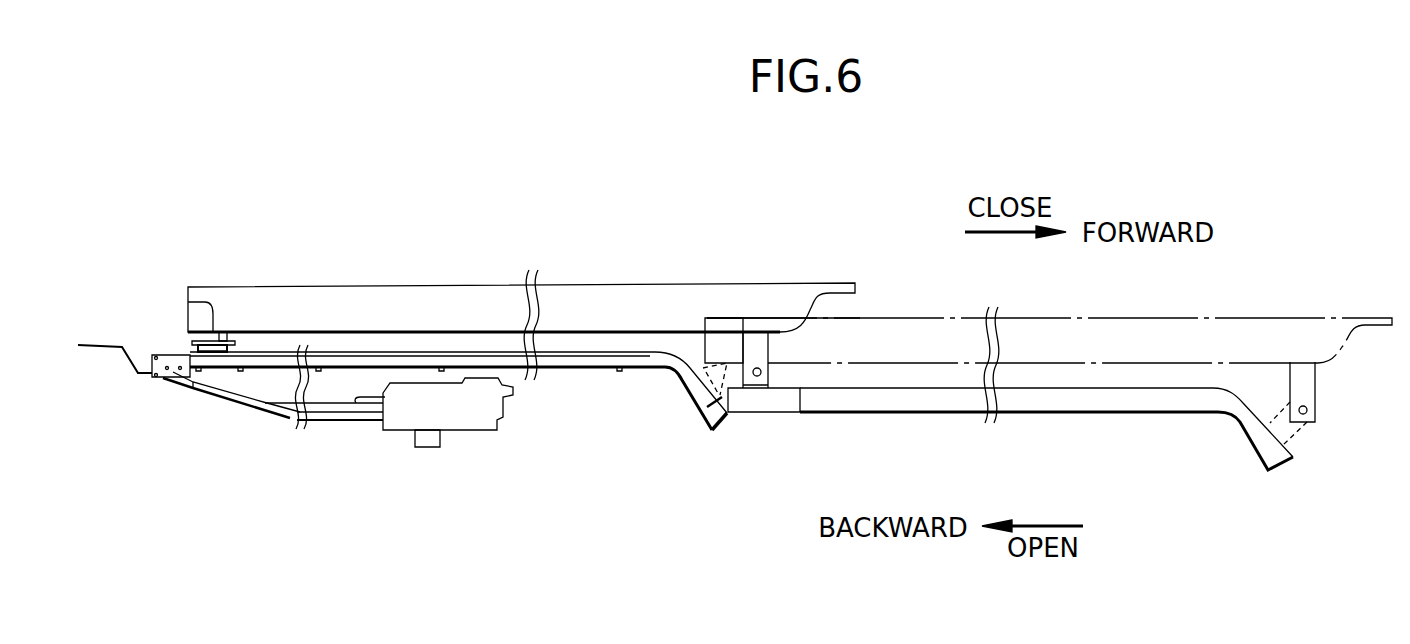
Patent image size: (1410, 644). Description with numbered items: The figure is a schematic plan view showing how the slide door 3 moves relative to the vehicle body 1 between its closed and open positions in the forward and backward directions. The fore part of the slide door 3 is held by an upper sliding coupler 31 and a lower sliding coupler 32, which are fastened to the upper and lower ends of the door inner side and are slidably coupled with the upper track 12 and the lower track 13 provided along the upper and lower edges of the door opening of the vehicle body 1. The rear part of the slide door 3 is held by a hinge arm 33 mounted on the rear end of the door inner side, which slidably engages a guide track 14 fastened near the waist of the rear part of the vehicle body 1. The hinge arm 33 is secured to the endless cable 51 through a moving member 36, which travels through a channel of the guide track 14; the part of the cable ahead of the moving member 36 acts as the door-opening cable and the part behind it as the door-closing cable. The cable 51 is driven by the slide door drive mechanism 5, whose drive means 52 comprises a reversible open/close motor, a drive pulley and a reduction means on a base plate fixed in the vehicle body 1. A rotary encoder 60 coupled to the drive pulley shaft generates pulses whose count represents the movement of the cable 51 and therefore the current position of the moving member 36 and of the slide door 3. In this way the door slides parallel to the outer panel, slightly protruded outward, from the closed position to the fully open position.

The vehicle body 1 is at (102, 333).
The slide door 3 is at (648, 292).
The slide door drive mechanism 5 is at (278, 424).
The upper track 12 is at (1055, 405).
The lower track 13 is at (1046, 437).
The guide track 14 is at (565, 362).
The upper sliding coupler 31 is at (793, 417).
The lower sliding coupler 32 is at (1036, 415).
The hinge arm 33 is at (224, 333).
The moving member 36 is at (197, 353).
The cable 51 is at (222, 397).
The drive means 52 is at (383, 438).
The rotary encoder 60 is at (427, 448).